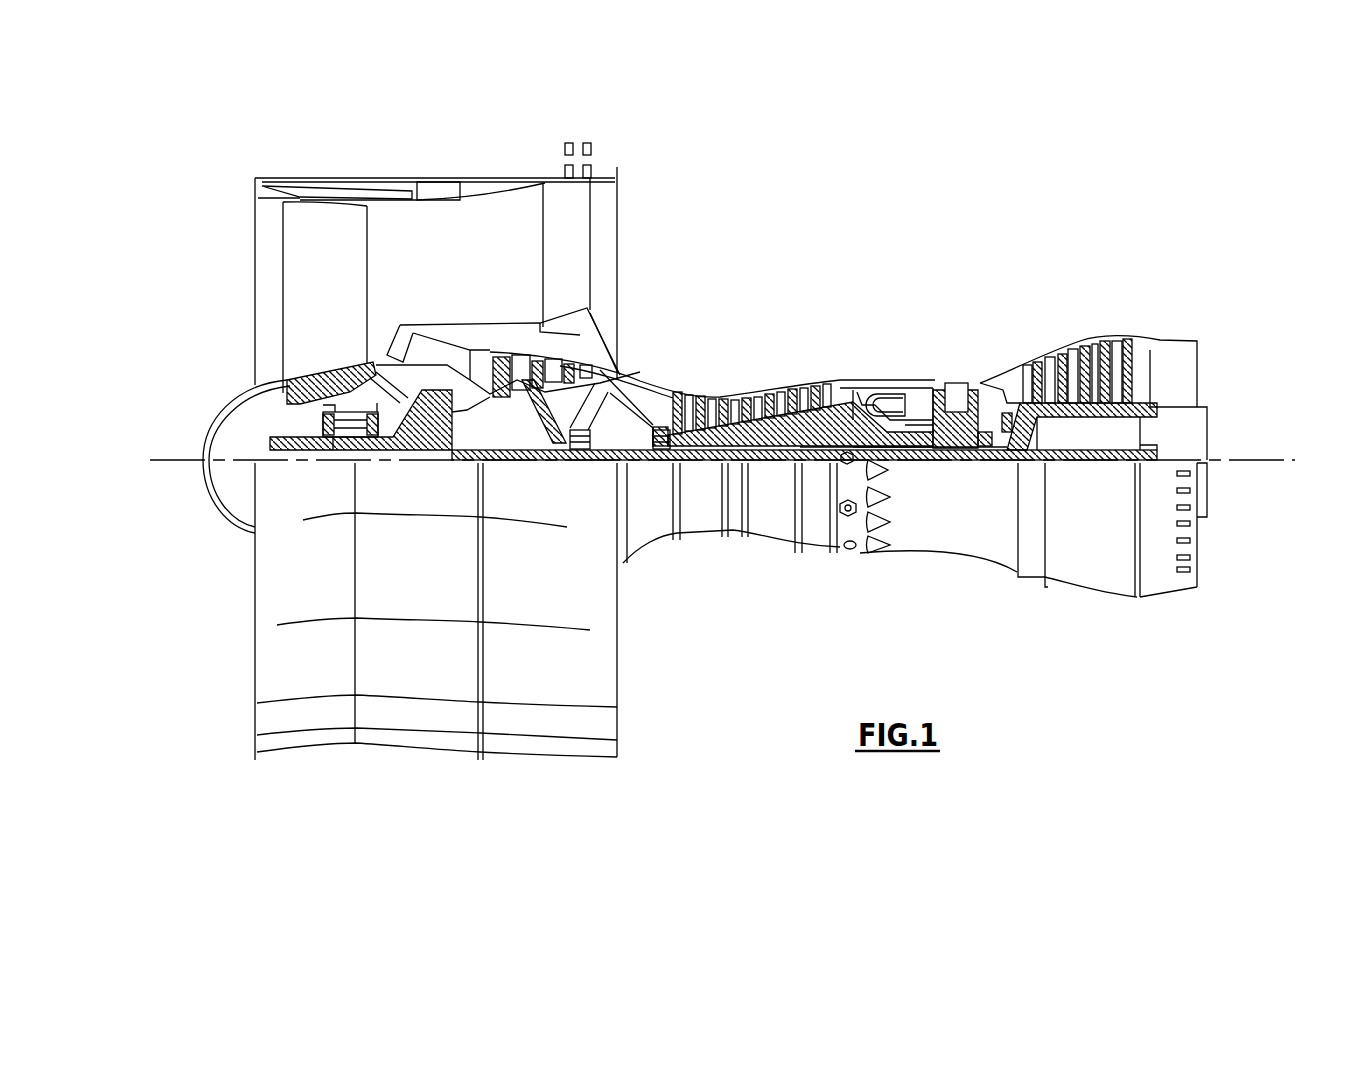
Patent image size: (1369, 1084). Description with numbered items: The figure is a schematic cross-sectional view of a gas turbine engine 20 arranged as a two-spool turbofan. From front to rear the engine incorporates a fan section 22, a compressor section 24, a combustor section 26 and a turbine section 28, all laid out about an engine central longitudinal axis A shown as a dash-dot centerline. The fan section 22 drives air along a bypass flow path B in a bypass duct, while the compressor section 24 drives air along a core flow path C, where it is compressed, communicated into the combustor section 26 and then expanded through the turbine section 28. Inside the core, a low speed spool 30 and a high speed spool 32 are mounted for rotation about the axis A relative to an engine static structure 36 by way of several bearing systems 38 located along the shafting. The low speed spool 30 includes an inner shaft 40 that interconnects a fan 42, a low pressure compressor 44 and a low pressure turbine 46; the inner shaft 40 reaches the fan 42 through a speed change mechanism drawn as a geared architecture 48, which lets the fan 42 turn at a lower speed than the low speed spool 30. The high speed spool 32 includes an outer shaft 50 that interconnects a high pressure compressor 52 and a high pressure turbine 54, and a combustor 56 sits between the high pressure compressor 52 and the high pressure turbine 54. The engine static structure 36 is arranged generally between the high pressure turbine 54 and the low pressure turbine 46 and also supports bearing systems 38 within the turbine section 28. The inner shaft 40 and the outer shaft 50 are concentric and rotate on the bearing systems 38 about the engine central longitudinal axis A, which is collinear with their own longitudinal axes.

The gas turbine engine 20 is at (900, 224).
The fan section 22 is at (240, 152).
The compressor section 24 is at (475, 297).
The combustor section 26 is at (927, 297).
The turbine section 28 is at (937, 297).
The low speed spool 30 is at (773, 472).
The high speed spool 32 is at (820, 410).
The engine static structure 36 is at (814, 562).
The bearing systems 38 is at (330, 465).
The inner shaft 40 is at (630, 465).
The fan 42 is at (339, 306).
The low pressure compressor 44 is at (552, 363).
The low pressure turbine 46 is at (1083, 353).
The geared architecture 48 is at (448, 450).
The outer shaft 50 is at (907, 447).
The high pressure compressor 52 is at (750, 432).
The high pressure turbine 54 is at (953, 380).
The combustor 56 is at (890, 405).
The engine central longitudinal axis A is at (1292, 458).
The bypass flow path B is at (485, 252).
The core flow path C is at (432, 357).